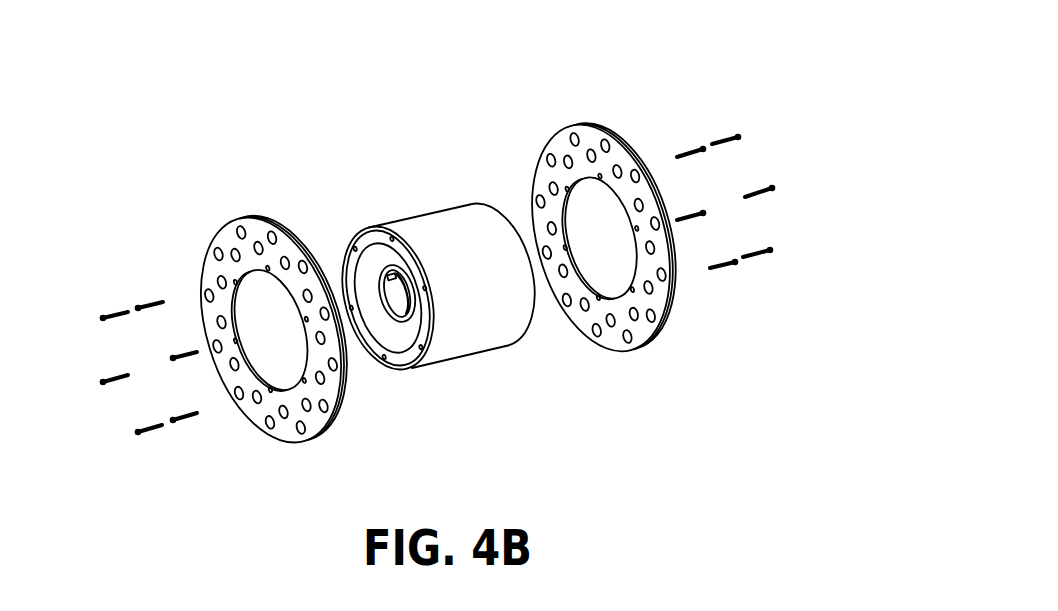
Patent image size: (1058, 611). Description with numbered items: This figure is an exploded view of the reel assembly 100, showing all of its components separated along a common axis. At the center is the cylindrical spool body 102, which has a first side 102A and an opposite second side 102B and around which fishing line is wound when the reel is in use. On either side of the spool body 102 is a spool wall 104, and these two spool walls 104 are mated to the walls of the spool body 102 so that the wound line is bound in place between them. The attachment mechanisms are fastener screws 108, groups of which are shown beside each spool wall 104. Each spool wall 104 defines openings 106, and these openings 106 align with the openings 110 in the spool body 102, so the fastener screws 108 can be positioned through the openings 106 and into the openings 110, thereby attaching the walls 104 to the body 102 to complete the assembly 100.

The reel assembly 100 is at (205, 118).
The spool body 102 is at (416, 259).
The first side of the spool body 102A is at (340, 266).
The second side of the spool body 102B is at (502, 211).
The spool wall 104 is at (206, 254).
The openings in the spool walls 106 is at (272, 274).
The fastener screws 108 is at (138, 308).
The openings in the spool body 110 is at (439, 295).